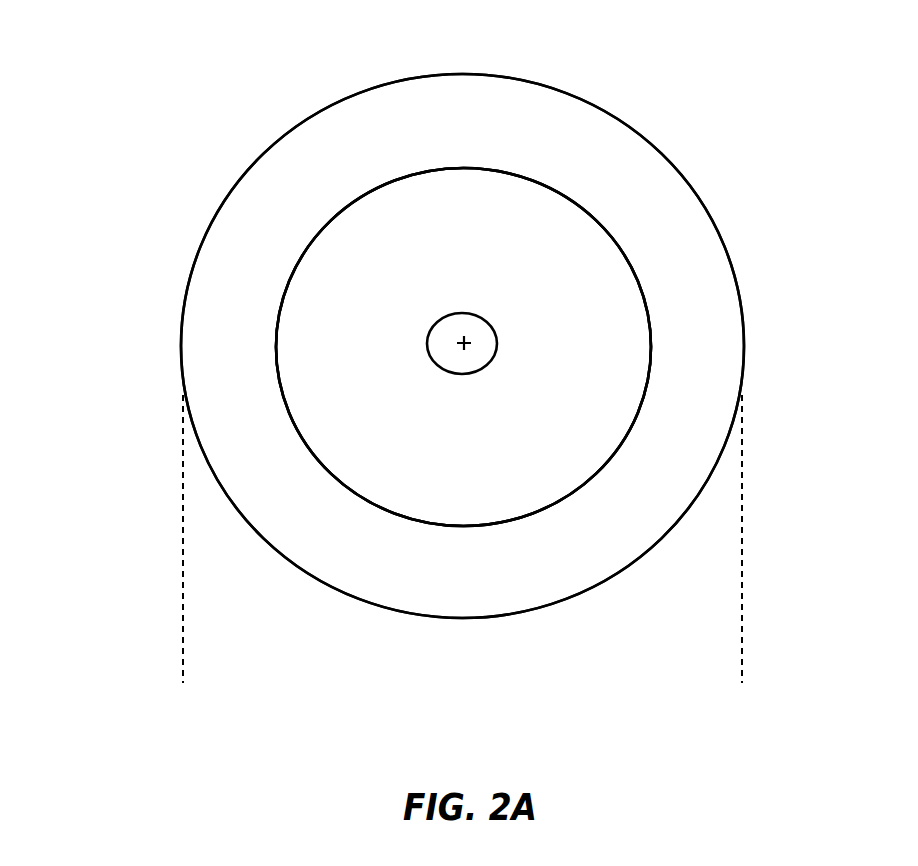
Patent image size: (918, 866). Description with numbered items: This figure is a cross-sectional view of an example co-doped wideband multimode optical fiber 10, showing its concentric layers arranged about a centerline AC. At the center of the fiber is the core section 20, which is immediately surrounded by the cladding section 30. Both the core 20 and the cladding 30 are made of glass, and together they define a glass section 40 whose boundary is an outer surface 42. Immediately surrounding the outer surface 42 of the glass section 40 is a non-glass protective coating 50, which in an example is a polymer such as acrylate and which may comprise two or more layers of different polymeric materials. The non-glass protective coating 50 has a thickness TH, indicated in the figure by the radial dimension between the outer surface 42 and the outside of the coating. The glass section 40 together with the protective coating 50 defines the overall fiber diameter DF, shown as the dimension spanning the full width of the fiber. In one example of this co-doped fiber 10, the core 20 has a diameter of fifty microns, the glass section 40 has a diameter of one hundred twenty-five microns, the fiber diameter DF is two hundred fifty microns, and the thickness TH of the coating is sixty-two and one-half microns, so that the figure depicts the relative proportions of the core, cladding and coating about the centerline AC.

The co-doped wideband multimode optical fiber 10 is at (648, 94).
The non-glass protective coating 50 is at (326, 154).
The outer surface 42 is at (585, 206).
The glass section 40 is at (110, 204).
The cladding section 30 is at (407, 243).
The core section 20 is at (448, 324).
The centerline AC is at (464, 351).
The thickness TH is at (592, 343).
The fiber diameter DF is at (743, 683).